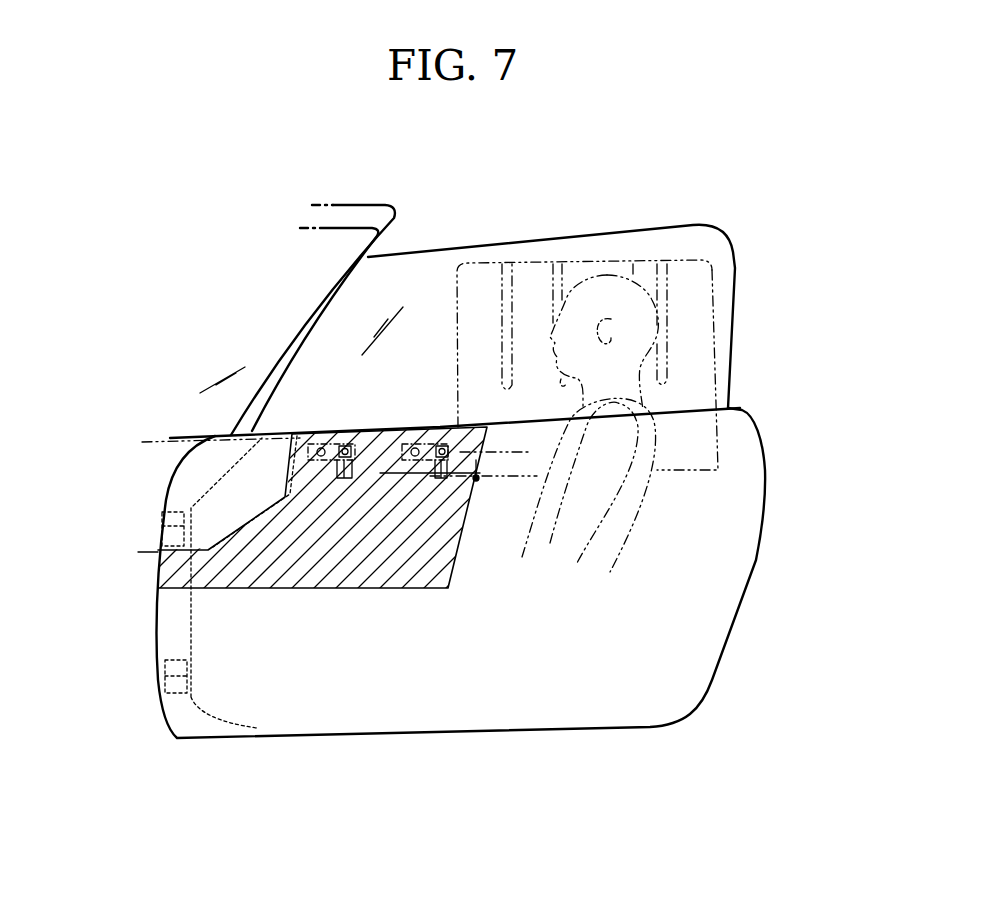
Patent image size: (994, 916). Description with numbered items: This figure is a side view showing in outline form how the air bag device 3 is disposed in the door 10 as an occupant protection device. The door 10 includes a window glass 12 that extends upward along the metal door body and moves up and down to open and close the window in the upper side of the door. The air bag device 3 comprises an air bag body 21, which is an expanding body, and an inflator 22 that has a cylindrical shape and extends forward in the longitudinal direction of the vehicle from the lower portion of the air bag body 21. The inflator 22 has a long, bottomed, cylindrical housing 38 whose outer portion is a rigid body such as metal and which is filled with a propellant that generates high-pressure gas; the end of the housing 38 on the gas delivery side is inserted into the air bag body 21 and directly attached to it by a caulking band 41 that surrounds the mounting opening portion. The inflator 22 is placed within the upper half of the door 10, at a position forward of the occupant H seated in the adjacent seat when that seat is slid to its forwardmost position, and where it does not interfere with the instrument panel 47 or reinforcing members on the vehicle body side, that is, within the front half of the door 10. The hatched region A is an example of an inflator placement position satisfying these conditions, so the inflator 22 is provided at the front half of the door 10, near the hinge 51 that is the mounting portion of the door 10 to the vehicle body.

The door 10 is at (768, 546).
The window glass 12 is at (711, 240).
The air bag device 3 is at (720, 264).
The air bag body 21 is at (722, 307).
The inflator 22 is at (375, 480).
The housing 38 is at (413, 483).
The caulking band 41 is at (476, 480).
The instrument panel 47 is at (158, 440).
The hinge 51 is at (162, 521).
The occupant H is at (632, 275).
The region A is at (297, 589).